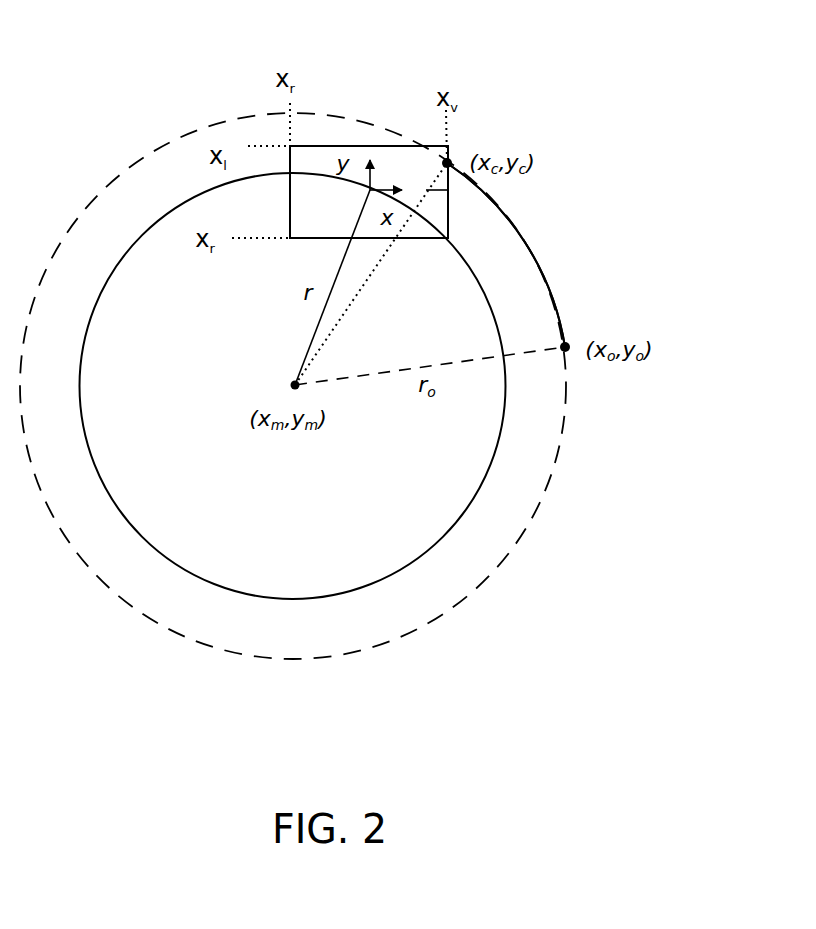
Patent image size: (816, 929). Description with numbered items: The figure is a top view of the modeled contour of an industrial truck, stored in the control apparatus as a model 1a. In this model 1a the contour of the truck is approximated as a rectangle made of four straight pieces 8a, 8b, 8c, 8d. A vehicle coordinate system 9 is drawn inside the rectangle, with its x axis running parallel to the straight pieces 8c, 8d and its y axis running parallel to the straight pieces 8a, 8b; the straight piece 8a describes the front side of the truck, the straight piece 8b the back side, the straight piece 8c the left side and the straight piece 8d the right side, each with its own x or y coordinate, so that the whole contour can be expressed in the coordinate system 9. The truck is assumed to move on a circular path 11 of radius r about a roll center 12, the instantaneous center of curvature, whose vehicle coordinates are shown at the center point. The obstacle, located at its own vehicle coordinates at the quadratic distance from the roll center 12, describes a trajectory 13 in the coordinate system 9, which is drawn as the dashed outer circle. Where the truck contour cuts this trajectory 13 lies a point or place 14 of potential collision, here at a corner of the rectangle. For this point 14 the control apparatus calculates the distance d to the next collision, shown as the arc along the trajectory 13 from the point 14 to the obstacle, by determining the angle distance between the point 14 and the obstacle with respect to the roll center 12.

The model of the industrial truck 1a is at (374, 134).
The coordinate system 9 is at (386, 175).
The point or place 14 is at (451, 158).
The straight piece 8a is at (448, 215).
The straight piece 8b is at (290, 177).
The straight piece 8c is at (333, 146).
The straight piece 8d is at (307, 239).
The distance d is at (552, 289).
The circular path 11 is at (142, 530).
The roll center 12 is at (294, 383).
The trajectory of the obstacle 13 is at (526, 533).